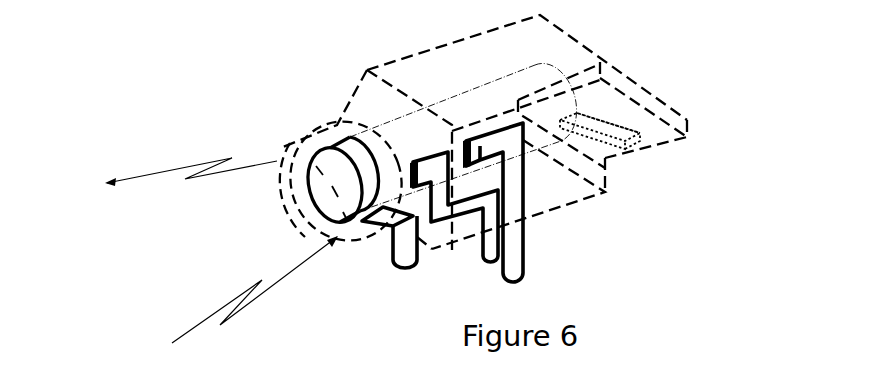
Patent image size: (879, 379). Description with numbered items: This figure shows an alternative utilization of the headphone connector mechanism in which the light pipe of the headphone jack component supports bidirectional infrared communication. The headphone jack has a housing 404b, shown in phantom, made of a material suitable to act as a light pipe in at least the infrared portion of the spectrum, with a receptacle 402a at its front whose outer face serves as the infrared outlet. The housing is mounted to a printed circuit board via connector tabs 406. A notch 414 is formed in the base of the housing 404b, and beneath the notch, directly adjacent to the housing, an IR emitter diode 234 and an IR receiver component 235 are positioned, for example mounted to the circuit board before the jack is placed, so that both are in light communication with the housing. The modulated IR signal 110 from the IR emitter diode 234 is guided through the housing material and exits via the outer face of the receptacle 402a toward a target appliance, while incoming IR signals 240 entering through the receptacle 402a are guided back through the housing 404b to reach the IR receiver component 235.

The modulated IR signal 110 is at (163, 167).
The incoming IR signals 240 is at (222, 302).
The receptacle 402a is at (293, 145).
The housing 404b is at (593, 48).
The IR receiver component 235 is at (567, 118).
The IR emitter diode 234 is at (617, 130).
The notch 414 is at (652, 171).
The connector tabs 406 is at (492, 265).